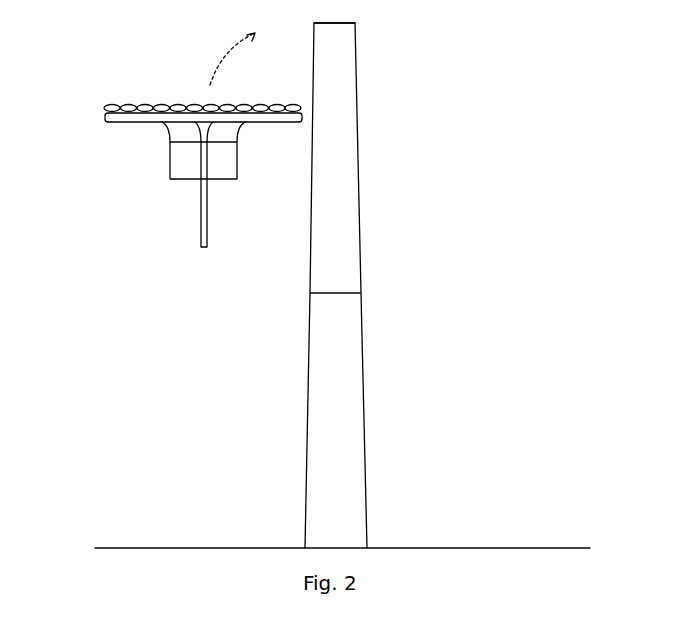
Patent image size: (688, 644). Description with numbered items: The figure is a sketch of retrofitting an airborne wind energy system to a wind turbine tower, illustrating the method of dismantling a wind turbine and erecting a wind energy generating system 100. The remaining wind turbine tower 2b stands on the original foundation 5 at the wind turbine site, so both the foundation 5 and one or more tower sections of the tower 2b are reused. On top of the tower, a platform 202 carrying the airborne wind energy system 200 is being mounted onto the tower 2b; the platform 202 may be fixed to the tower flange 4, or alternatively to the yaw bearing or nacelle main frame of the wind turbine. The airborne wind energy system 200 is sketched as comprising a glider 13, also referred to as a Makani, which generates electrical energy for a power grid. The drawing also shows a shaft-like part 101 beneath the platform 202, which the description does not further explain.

The wind turbine tower 2b is at (353, 180).
The tower flange 4 is at (355, 24).
The foundation 5 is at (393, 552).
The glider 13 is at (135, 112).
The wind energy generating system 100 is at (452, 285).
The shaft / mast 101 is at (206, 222).
The airborne wind energy system 200 is at (150, 113).
The platform 202 is at (172, 127).